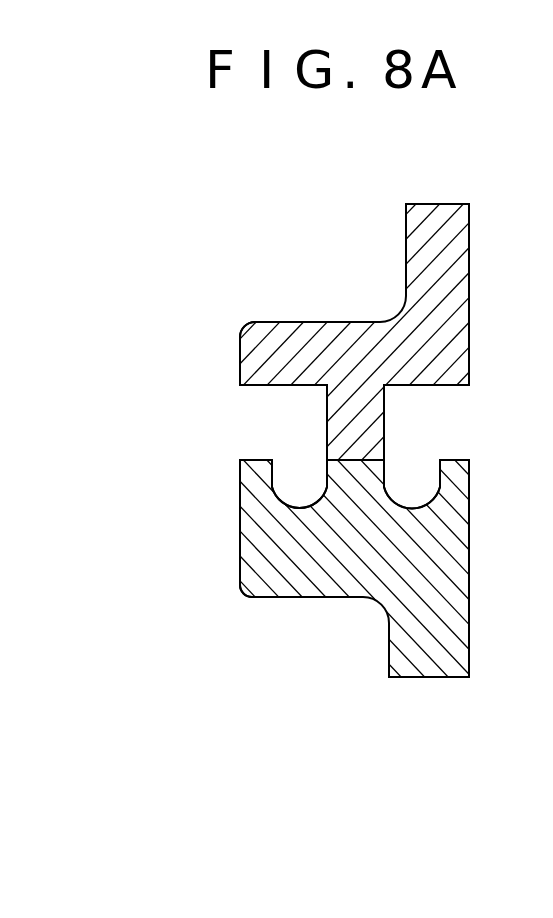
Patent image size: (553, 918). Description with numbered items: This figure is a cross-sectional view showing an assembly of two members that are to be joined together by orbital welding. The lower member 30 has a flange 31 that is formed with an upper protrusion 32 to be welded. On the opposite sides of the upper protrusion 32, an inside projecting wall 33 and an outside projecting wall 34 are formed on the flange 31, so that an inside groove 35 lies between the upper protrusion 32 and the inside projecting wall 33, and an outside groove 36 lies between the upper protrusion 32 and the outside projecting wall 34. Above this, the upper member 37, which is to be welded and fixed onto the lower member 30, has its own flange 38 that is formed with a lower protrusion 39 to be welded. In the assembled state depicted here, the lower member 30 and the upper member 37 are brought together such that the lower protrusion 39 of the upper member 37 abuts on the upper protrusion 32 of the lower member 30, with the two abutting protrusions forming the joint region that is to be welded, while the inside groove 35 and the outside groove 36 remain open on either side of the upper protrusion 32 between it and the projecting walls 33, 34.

The lower member 30 is at (413, 645).
The flange 31 is at (275, 577).
The upper protrusion 32 is at (305, 478).
The inside projecting wall 33 is at (453, 488).
The outside projecting wall 34 is at (260, 482).
The inside groove 35 is at (408, 478).
The outside groove 36 is at (305, 478).
The upper member 37 is at (427, 242).
The flange 38 is at (280, 353).
The lower protrusion 39 is at (372, 423).